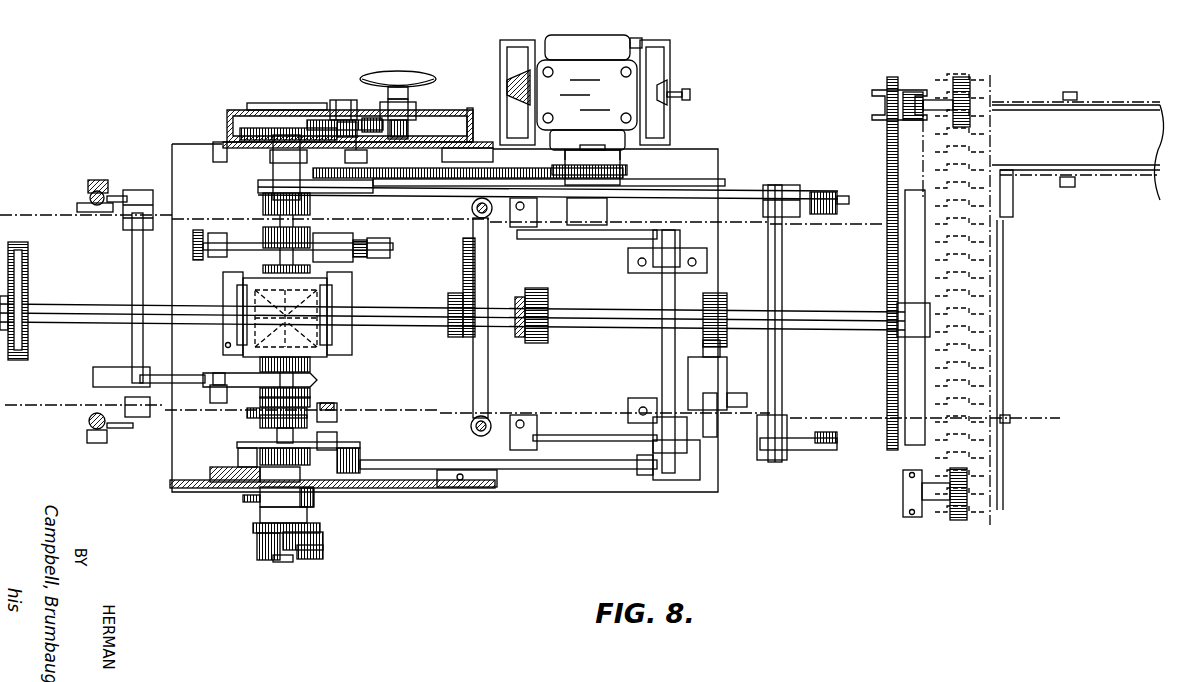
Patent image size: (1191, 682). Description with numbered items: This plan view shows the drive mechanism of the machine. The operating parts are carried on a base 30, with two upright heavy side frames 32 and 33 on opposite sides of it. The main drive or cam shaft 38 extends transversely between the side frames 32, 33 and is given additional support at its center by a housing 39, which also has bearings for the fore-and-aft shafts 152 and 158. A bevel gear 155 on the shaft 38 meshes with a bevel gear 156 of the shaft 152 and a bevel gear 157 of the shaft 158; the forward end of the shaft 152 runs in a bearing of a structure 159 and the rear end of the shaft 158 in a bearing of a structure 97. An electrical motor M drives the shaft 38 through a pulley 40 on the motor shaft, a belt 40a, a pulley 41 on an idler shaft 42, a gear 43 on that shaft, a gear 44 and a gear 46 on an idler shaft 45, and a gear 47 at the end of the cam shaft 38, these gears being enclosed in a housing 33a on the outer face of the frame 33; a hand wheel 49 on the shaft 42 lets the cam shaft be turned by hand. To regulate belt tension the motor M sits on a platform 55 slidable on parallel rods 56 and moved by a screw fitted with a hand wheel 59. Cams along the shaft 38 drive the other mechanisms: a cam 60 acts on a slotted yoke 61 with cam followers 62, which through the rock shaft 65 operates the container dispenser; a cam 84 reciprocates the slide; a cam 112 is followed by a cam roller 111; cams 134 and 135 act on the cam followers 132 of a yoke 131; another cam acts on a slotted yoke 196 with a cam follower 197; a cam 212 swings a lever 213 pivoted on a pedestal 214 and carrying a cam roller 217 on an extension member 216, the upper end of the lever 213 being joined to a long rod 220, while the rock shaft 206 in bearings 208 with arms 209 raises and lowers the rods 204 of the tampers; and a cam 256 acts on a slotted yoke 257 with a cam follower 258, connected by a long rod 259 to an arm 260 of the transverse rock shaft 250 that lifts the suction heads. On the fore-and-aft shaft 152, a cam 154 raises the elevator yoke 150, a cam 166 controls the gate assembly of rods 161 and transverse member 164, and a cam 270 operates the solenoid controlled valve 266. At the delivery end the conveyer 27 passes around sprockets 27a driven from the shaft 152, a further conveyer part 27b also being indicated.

The base 30 is at (572, 492).
The side frame 32 is at (428, 488).
The gear 47 is at (250, 132).
The gear 44 is at (320, 125).
The idler shaft 45 is at (345, 110).
The gear 43 is at (375, 125).
The hand wheel 49 is at (390, 75).
The idler shaft 42 is at (410, 110).
The side frame 33 is at (450, 145).
The housing 33a is at (470, 118).
The gear 46 is at (362, 140).
The main drive shaft 38 is at (283, 562).
The slotted yoke 257 is at (262, 193).
The cam 256 is at (352, 212).
The belt 40a is at (548, 170).
The pulley 41 is at (465, 185).
The long rod 259 is at (728, 190).
The arm 260 is at (812, 192).
The rock shaft 250 is at (780, 285).
The cam 84 is at (262, 243).
The cam follower 258 is at (372, 215).
The bevel gear 157 is at (240, 300).
The bevel gear 156 is at (340, 290).
The bevel gear 155 is at (340, 342).
The housing 39 is at (245, 360).
The yoke 61 is at (318, 378).
The cam 60 is at (312, 396).
The cam follower 62 is at (213, 397).
The cam 112 is at (250, 413).
The cam roller 111 is at (335, 408).
The pedestal 214 is at (340, 440).
The extension member 216 is at (237, 446).
The cam roller 217 is at (240, 455).
The cam 212 is at (340, 455).
The lever 213 is at (362, 463).
The arm 209 is at (587, 438).
The slotted yoke 196 is at (243, 499).
The cam follower 197 is at (310, 492).
The cam 135 is at (253, 528).
The yoke 131 is at (323, 541).
The cam 134 is at (257, 545).
The cam follower 132 is at (310, 553).
The fore-and-aft shaft 158 is at (88, 322).
The fore-and-aft shaft 152 is at (830, 330).
The structure 97 is at (28, 295).
The rock shaft 65 is at (132, 255).
The transverse member 164 is at (490, 383).
The rod 161 is at (490, 422).
The cam 166 is at (463, 265).
The yoke 150 is at (519, 297).
The cam 154 is at (540, 290).
The cam 270 is at (718, 300).
The rock shaft 206 is at (662, 352).
The solenoid controlled valve 266 is at (725, 378).
The bearing 208 is at (632, 408).
The rod 204 is at (538, 424).
The long rod 220 is at (598, 470).
The structure 159 is at (905, 365).
The rack 27b is at (892, 80).
The sprocket 27a is at (960, 520).
The conveyer 27 is at (970, 305).
The electrical motor M is at (600, 95).
The rod 56 is at (660, 140).
The platform 55 is at (640, 45).
The hand wheel 59 is at (690, 112).
The pulley 40 is at (620, 180).